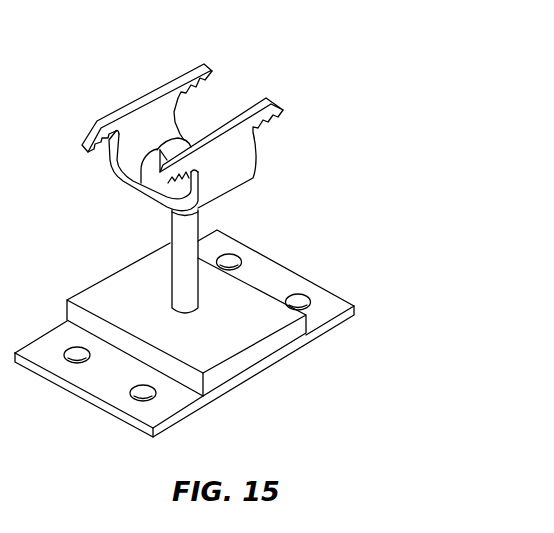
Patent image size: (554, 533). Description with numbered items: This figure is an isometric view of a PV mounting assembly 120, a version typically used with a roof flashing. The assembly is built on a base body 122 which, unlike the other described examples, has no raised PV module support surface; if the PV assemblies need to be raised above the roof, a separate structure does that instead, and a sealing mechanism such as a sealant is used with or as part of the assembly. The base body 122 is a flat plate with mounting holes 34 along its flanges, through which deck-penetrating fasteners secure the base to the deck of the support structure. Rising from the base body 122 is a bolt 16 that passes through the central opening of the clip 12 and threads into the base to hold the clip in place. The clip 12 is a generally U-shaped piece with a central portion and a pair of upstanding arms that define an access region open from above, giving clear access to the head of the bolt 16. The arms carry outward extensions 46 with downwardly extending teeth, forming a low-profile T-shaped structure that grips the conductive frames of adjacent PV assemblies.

The PV mounting assembly 120 is at (416, 33).
The clip 12 is at (125, 92).
The extensions 46 is at (194, 61).
The bolt 16 is at (184, 261).
The base body 122 is at (284, 388).
The mounting holes 34 is at (139, 397).